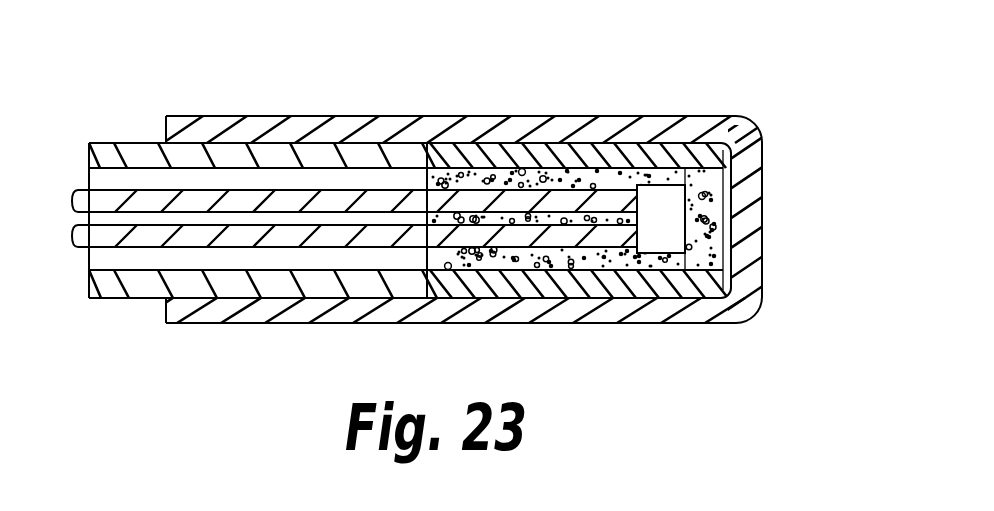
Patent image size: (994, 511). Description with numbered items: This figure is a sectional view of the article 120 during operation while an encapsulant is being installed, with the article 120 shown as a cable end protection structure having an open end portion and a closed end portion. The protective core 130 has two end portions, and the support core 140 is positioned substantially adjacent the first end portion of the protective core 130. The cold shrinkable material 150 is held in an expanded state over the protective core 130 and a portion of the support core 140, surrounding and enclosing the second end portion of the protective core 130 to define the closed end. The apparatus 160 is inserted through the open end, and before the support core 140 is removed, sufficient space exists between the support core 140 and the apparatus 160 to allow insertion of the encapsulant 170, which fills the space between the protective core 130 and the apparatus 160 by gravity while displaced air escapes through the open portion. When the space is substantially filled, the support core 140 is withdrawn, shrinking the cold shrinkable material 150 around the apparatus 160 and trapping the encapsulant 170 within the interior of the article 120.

The article 120 is at (663, 88).
The protective core 130 is at (557, 150).
The support core 140 is at (122, 150).
The cold shrinkable material 150 is at (369, 130).
The apparatus 160 is at (675, 217).
The encapsulant 170 is at (456, 177).